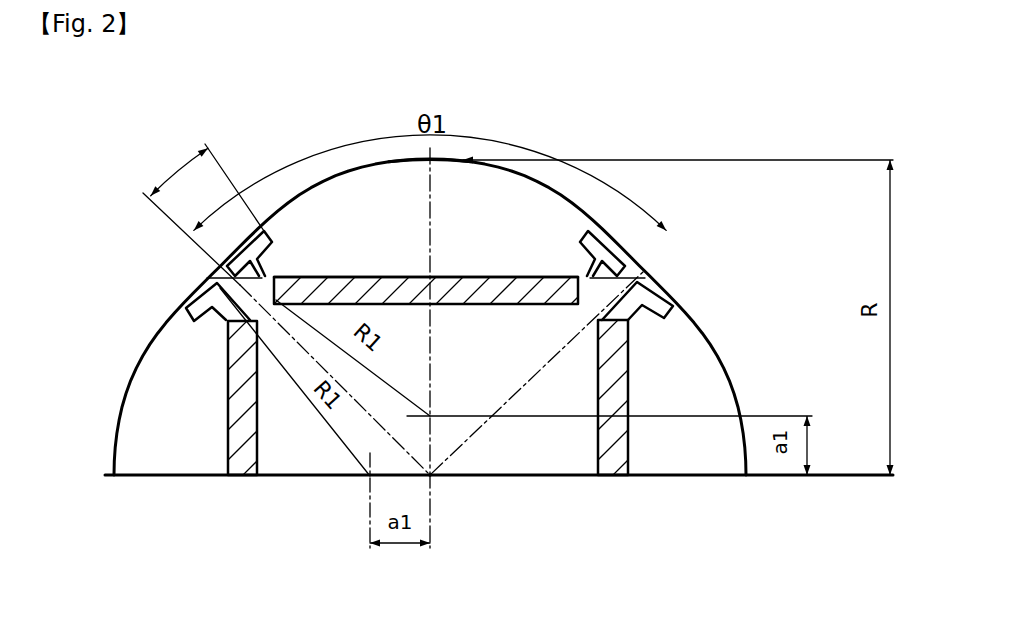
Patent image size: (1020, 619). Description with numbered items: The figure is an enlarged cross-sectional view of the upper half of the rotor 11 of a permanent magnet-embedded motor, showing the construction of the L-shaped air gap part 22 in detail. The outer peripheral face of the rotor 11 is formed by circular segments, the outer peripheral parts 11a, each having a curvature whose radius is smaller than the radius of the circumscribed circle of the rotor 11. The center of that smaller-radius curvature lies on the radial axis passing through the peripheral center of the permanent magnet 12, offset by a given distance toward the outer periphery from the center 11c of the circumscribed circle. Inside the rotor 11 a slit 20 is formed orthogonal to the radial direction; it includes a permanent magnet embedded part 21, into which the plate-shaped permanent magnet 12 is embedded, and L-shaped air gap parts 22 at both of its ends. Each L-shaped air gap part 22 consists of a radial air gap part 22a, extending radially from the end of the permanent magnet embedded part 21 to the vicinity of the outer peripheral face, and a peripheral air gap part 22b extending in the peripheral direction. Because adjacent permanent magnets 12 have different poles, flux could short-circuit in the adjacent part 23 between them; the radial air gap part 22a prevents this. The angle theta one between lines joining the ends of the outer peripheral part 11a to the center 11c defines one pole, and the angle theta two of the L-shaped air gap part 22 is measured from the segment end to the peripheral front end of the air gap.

The rotor 11 is at (157, 433).
The outer peripheral part 11a is at (443, 160).
The center of the circumscribed circle 11c is at (432, 476).
The permanent magnet 12 is at (490, 282).
The slit 20 is at (548, 278).
The permanent magnet embedded part 21 is at (400, 276).
The L-shaped air gap part 22 is at (494, 210).
The radial air gap part 22a is at (640, 278).
The peripheral air gap part 22b is at (593, 247).
The adjacent part 23 is at (197, 128).